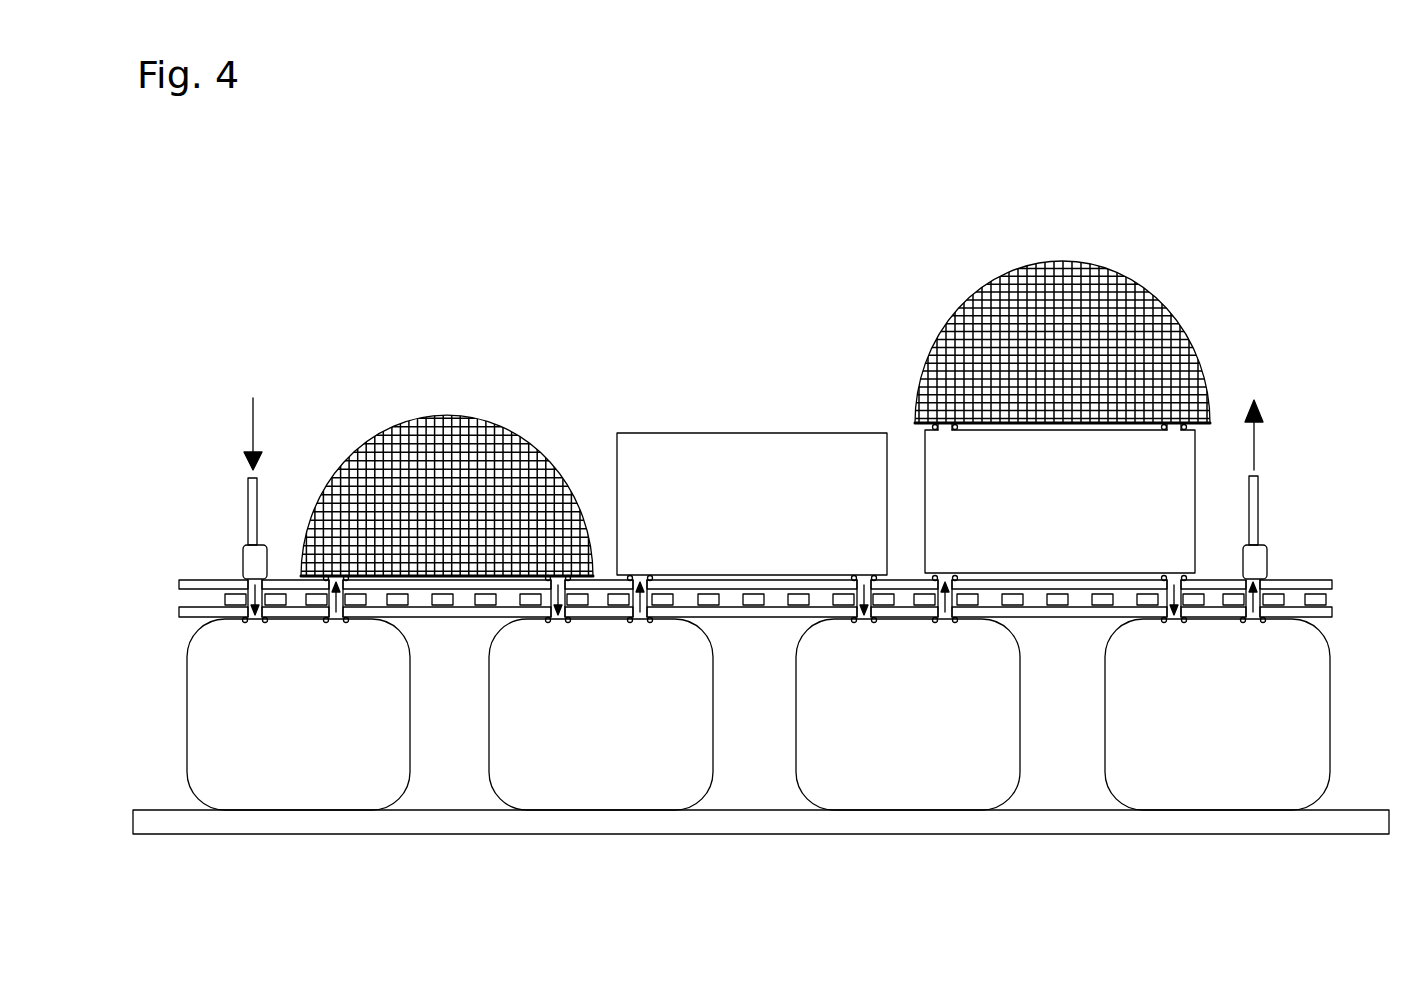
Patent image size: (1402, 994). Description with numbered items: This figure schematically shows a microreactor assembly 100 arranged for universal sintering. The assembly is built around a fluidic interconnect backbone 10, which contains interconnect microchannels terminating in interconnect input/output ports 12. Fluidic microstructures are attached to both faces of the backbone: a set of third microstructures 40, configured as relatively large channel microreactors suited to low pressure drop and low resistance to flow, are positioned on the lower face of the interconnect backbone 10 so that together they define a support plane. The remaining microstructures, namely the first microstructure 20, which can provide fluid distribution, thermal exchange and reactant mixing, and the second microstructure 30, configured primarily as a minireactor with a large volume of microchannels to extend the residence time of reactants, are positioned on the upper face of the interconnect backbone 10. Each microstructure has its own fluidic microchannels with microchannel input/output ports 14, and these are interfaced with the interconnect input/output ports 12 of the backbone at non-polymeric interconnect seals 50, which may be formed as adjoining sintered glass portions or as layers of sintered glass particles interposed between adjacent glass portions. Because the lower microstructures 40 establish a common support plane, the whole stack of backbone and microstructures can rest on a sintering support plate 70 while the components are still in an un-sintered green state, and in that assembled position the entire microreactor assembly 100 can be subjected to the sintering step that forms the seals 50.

The microreactor assembly 100 is at (1234, 181).
The fluidic interconnect backbone 10 is at (178, 563).
The interconnect input/output ports 12 is at (345, 621).
The microchannel input/output ports 14 is at (326, 572).
The first microstructure 20 is at (765, 463).
The second microstructure 30 is at (460, 443).
The third microstructure 40 is at (311, 803).
The non-polymeric interconnect seals 50 is at (356, 575).
The sintering support plate 70 is at (763, 823).